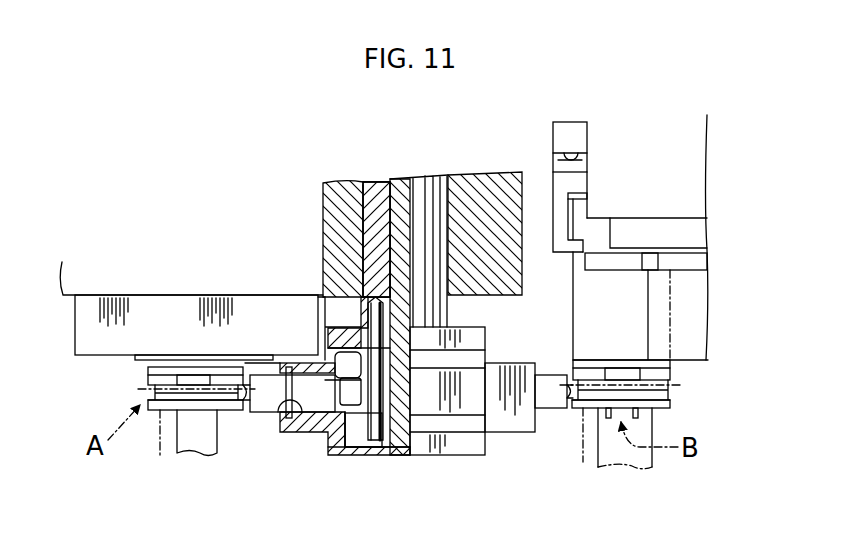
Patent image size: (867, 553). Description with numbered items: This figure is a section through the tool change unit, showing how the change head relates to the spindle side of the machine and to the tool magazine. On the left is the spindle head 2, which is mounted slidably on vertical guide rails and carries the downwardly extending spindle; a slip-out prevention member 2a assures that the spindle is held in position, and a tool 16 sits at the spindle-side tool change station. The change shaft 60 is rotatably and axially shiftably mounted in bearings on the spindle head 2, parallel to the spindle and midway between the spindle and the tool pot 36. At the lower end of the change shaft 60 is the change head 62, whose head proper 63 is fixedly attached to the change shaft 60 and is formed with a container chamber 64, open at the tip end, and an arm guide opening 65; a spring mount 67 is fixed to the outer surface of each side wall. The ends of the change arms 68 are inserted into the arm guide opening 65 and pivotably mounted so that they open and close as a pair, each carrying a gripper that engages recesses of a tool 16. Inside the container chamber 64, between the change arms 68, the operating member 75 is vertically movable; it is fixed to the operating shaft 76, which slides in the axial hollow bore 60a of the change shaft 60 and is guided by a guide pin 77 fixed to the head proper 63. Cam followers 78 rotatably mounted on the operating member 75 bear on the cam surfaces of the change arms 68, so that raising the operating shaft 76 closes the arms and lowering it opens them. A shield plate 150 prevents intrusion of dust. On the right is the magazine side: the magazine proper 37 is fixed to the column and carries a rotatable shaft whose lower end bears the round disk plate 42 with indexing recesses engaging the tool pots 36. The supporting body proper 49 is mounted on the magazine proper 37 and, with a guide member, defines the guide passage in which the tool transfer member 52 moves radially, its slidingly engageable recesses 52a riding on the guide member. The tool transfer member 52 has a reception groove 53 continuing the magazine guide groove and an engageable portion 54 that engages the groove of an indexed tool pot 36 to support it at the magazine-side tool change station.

The spindle head 2 is at (478, 186).
The slip-out prevention member 2a is at (112, 342).
The tool 16 is at (160, 413).
The tool pot 36 is at (690, 348).
The magazine proper 37 is at (690, 240).
The round disk plate 42 is at (700, 262).
The supporting body proper 49 is at (700, 180).
The tool transfer member 52 is at (568, 130).
The slidingly engageable recesses 52a is at (583, 157).
The reception groove 53 is at (563, 207).
The engageable portion 54 is at (579, 240).
The change shaft 60 is at (376, 185).
The axial hollow bore 60a is at (345, 222).
The change head 62 is at (320, 452).
The head proper 63 is at (288, 425).
The container chamber 64 is at (353, 440).
The arm guide opening 65 is at (282, 404).
The spring mount 67 is at (458, 420).
The change arm 68 is at (240, 398).
The operating member 75 is at (390, 436).
The operating shaft 76 is at (397, 178).
The guide pin 77 is at (358, 310).
The cam follower 78 is at (347, 437).
The shield plate 150 is at (283, 376).